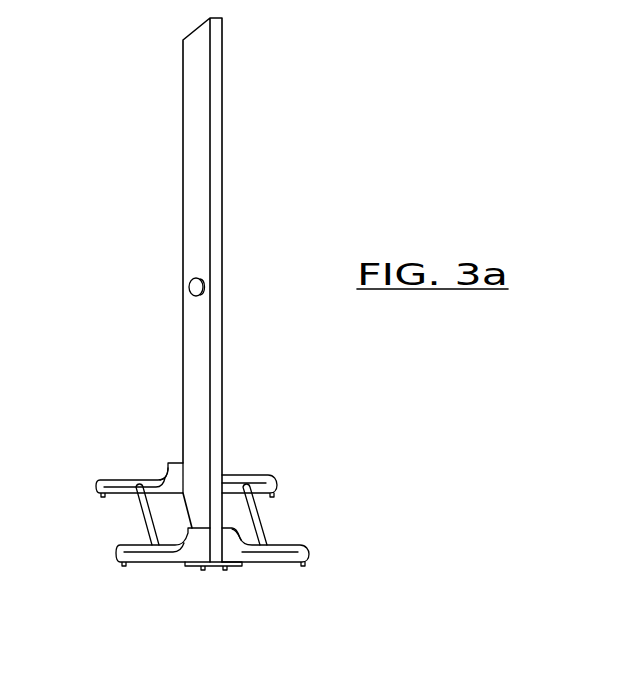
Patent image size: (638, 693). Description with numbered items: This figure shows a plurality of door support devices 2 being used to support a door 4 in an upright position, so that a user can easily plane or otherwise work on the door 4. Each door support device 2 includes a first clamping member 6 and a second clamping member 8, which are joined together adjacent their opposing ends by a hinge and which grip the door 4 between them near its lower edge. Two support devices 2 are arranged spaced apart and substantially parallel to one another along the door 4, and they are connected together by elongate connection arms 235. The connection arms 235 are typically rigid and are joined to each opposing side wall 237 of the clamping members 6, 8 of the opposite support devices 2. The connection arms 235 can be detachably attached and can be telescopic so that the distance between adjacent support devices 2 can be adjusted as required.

The door support device 2 is at (224, 505).
The door 4 is at (228, 198).
The first clamping member 6 is at (108, 478).
The second clamping member 8 is at (242, 478).
The elongate connection arm 235 is at (264, 520).
The side wall 237 is at (151, 478).